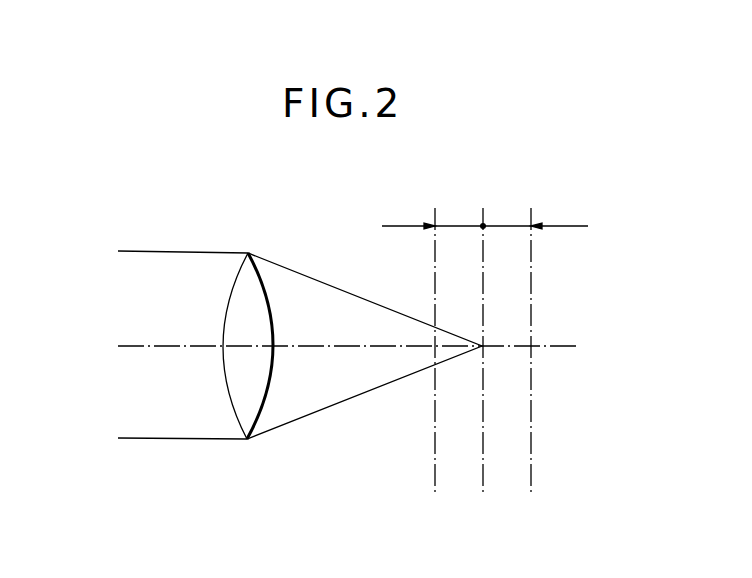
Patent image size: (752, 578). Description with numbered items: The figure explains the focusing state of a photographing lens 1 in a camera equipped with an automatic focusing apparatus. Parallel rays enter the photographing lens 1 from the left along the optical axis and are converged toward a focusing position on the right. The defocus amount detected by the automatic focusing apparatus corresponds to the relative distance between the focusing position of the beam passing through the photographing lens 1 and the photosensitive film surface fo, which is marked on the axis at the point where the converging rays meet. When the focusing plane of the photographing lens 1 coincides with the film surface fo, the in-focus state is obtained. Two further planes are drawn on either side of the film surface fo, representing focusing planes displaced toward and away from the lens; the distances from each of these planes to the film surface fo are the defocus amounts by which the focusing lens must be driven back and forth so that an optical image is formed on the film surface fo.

The photographing lens 1 is at (245, 281).
The film surface fo is at (483, 226).